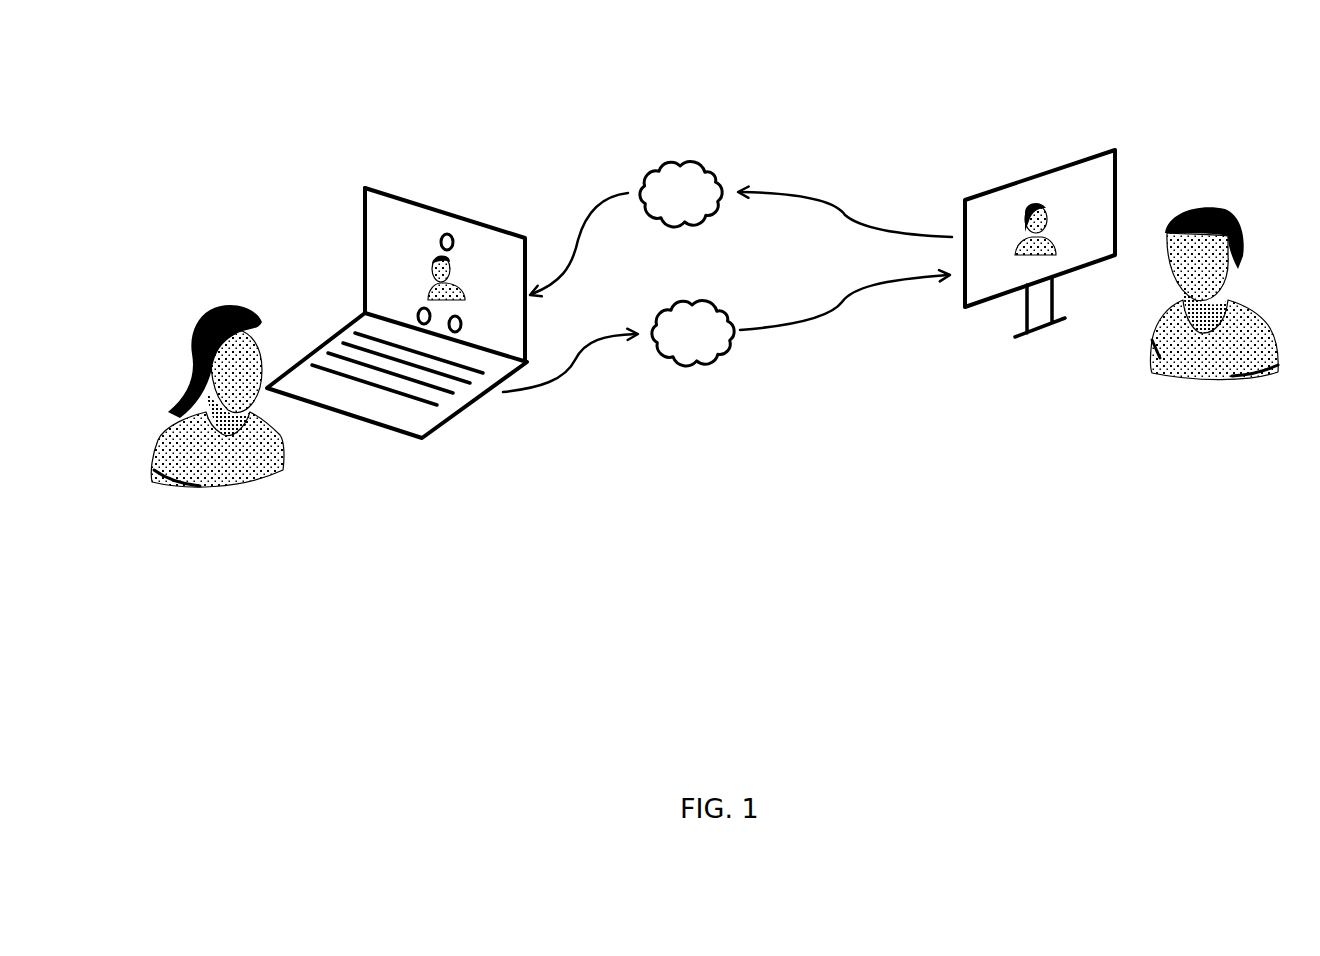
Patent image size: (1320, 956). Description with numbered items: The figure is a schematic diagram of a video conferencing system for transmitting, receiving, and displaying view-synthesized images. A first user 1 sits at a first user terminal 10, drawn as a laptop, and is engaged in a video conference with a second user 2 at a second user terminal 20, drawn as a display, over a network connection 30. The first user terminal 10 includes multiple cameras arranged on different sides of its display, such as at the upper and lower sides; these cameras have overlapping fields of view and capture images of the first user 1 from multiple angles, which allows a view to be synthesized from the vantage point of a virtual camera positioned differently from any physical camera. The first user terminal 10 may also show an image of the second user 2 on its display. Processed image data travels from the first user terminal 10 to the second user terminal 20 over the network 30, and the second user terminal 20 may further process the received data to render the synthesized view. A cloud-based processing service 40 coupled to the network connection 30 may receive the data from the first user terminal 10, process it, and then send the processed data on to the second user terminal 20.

The first user 1 is at (183, 293).
The second user 2 is at (1248, 200).
The first user terminal 10 is at (402, 185).
The second user terminal 20 is at (1090, 148).
The network connection 30 is at (618, 367).
The cloud-based processing service 40 is at (688, 367).